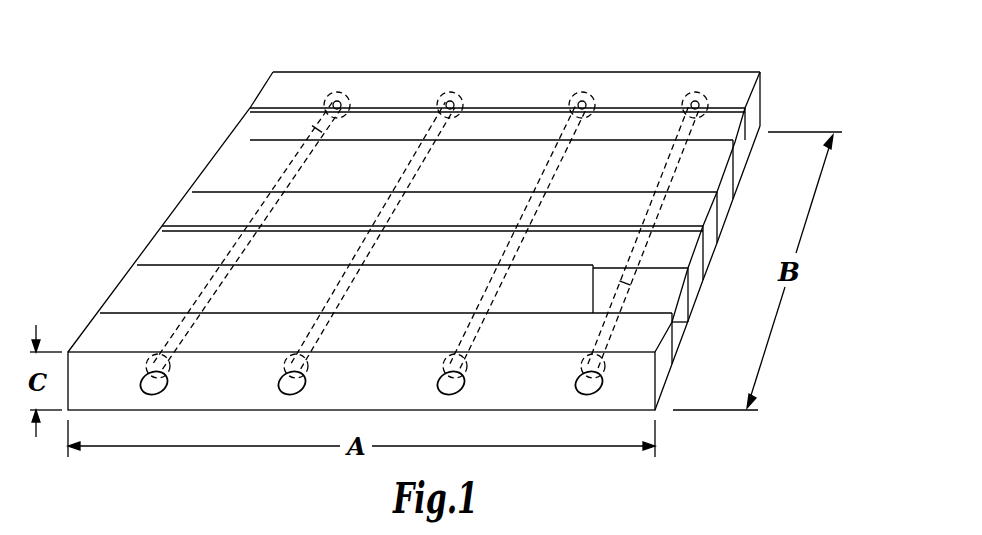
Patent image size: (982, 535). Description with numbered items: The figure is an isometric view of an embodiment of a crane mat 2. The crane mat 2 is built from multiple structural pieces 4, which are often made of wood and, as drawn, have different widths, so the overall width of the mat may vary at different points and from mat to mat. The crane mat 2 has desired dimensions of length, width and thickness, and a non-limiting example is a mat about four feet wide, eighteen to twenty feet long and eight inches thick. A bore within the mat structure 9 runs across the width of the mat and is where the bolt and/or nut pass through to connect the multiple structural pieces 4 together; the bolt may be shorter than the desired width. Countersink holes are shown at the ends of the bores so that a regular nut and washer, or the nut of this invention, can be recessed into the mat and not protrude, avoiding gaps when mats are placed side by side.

The crane mat 2 is at (564, 28).
The multiple structural pieces 4 is at (757, 130).
The bore within the mat structure 9 is at (338, 300).